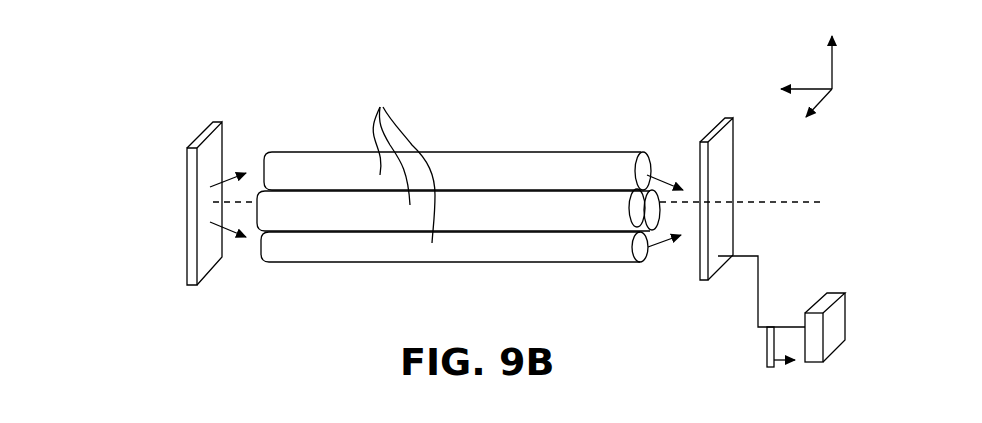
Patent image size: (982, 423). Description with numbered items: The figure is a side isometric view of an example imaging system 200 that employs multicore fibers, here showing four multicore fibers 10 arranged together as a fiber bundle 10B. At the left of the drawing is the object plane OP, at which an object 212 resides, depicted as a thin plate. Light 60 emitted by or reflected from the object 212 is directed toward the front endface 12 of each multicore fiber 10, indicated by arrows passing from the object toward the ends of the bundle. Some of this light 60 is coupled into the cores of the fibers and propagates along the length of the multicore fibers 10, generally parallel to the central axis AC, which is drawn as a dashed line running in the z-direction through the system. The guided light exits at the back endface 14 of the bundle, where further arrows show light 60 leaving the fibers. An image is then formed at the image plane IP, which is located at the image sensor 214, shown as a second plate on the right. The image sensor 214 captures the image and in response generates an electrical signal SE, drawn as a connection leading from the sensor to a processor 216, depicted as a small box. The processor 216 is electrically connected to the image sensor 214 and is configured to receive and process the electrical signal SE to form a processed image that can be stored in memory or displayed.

The imaging system 200 is at (247, 66).
The multicore fiber 10 is at (399, 160).
The fiber bundle 10B is at (489, 138).
The front endface 12 is at (251, 258).
The back endface 14 is at (655, 259).
The light 60 is at (237, 157).
The object 212 is at (190, 185).
The image sensor 214 is at (718, 166).
The processor 216 is at (833, 333).
The object plane OP is at (202, 292).
The image plane IP is at (703, 289).
The central axis AC is at (778, 203).
The electrical signal SE is at (770, 368).